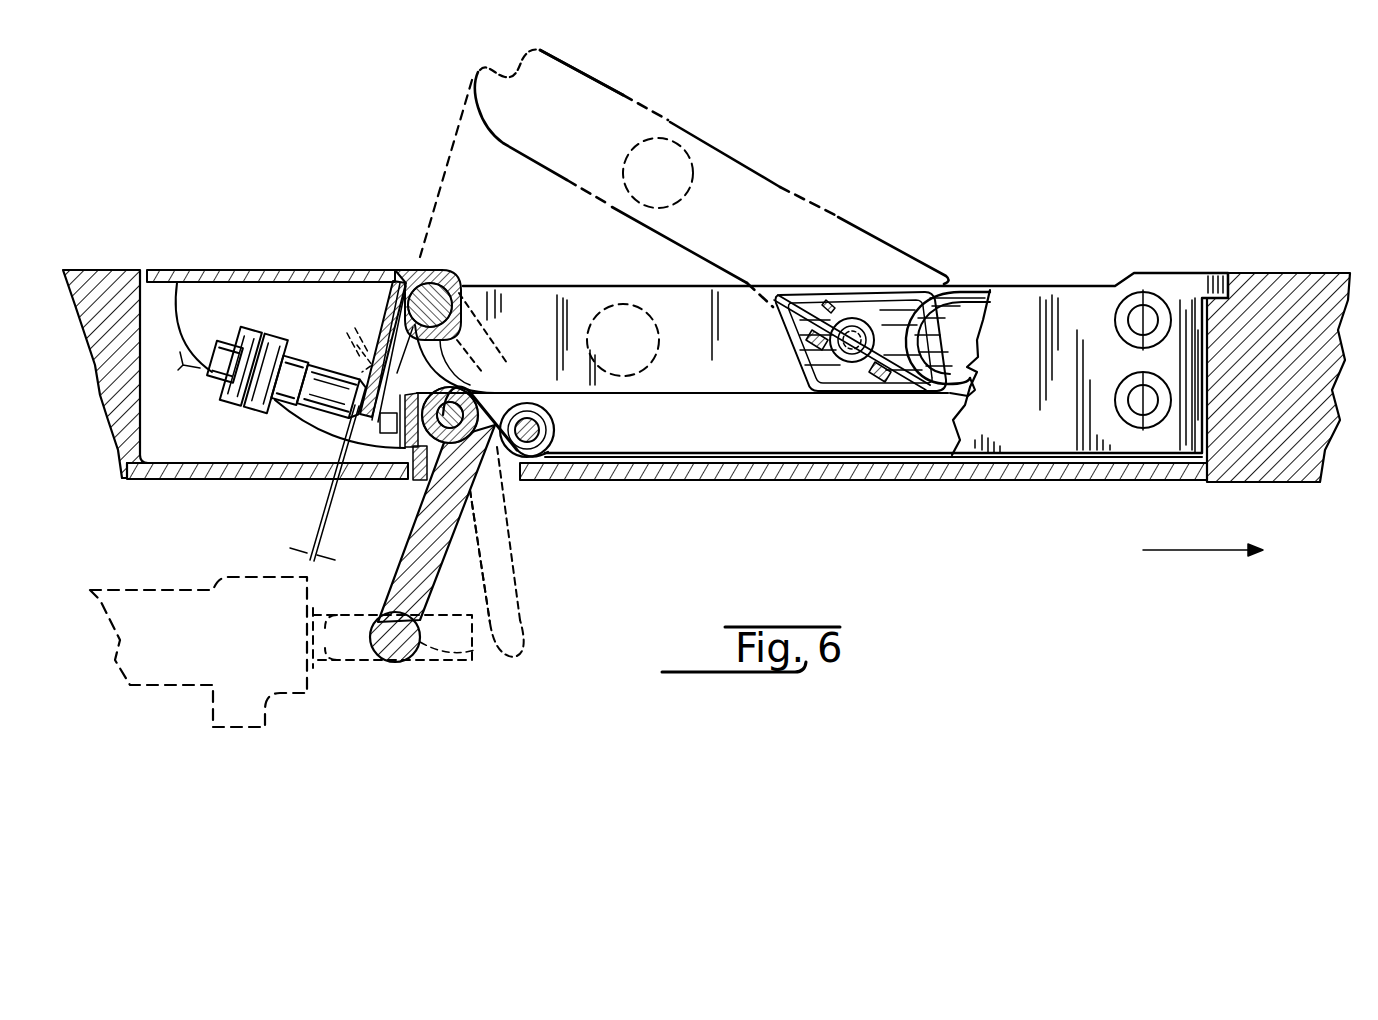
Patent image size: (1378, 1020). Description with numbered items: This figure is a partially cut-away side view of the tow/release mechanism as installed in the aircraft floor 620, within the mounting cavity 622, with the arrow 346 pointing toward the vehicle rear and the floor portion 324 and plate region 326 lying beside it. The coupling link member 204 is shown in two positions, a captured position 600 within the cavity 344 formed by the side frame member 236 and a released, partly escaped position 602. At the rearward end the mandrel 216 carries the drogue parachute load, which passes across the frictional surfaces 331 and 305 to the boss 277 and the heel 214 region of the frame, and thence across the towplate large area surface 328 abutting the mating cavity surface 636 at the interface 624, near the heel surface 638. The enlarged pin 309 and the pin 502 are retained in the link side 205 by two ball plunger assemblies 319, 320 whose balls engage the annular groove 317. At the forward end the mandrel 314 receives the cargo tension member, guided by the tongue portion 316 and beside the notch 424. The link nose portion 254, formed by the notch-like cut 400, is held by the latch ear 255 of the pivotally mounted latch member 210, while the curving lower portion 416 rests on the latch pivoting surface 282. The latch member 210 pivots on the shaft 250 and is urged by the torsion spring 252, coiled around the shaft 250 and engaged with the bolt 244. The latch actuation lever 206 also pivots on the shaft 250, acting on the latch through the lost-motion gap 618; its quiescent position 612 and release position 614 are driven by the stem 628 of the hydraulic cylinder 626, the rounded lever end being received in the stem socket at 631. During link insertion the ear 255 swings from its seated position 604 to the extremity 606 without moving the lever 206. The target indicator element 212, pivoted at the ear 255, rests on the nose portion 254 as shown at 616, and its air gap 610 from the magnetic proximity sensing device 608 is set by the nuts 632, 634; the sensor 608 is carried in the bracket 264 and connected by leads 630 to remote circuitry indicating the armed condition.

The coupling link member 204 is at (585, 78).
The link side 205 is at (968, 420).
The link latch actuation lever 206 is at (420, 500).
The latch member 210 is at (412, 460).
The target indicator element 212 is at (428, 270).
The detent block 214 is at (812, 380).
The mandrel 216 is at (843, 317).
The side frame member 236 is at (888, 450).
The bolt 244 is at (556, 431).
The shaft 250 is at (430, 445).
The torsion spring 252 is at (395, 420).
The nose portion 254 is at (380, 340).
The latch ear 255 is at (447, 277).
The bracket 264 is at (245, 340).
The boss 277 is at (955, 292).
The pivoting surface of the latch 282 is at (482, 397).
The frictional surface 305 is at (976, 382).
The pin 309 is at (848, 322).
The mandrel 314 is at (693, 172).
The tongue portion 316 is at (480, 355).
The annular groove 317 is at (815, 345).
The ball plunger assembly 319 is at (808, 305).
The ball plunger assembly 320 is at (885, 388).
The upper panel 324 is at (278, 272).
The mounting holes 326 is at (1187, 273).
The large area surface 328 is at (1200, 393).
The frictional surface 331 is at (952, 286).
The cavity 344 is at (704, 429).
The arrow 346 is at (1190, 550).
The notch-like cut 400 is at (462, 292).
The curving lower portion of the link nose 416 is at (478, 110).
The notch 424 is at (392, 282).
The pin 502 is at (856, 325).
The captured position 600 is at (697, 281).
The released position 602 is at (722, 121).
The latch ear seated position 604 is at (394, 318).
The latch ear extremity position 606 is at (340, 360).
The magnetic proximity sensing device 608 is at (283, 345).
The air gap 610 is at (305, 552).
The quiescent position of the lever 612 is at (374, 589).
The link release position of the lever 614 is at (560, 588).
The target indicator resting arrangement 616 is at (472, 310).
The gap 618 is at (468, 330).
The aircraft floor 620 is at (113, 272).
The mounting cavity 622 is at (168, 465).
The interface 624 is at (1188, 475).
The hydraulic cylinder 626 is at (140, 585).
The stem 628 is at (343, 657).
The leads 630 is at (185, 350).
The socket connection 631 is at (395, 665).
The nut 632 is at (260, 408).
The nut 634 is at (240, 405).
The mating cavity surface 636 is at (1212, 312).
The heel surface 638 is at (1120, 284).